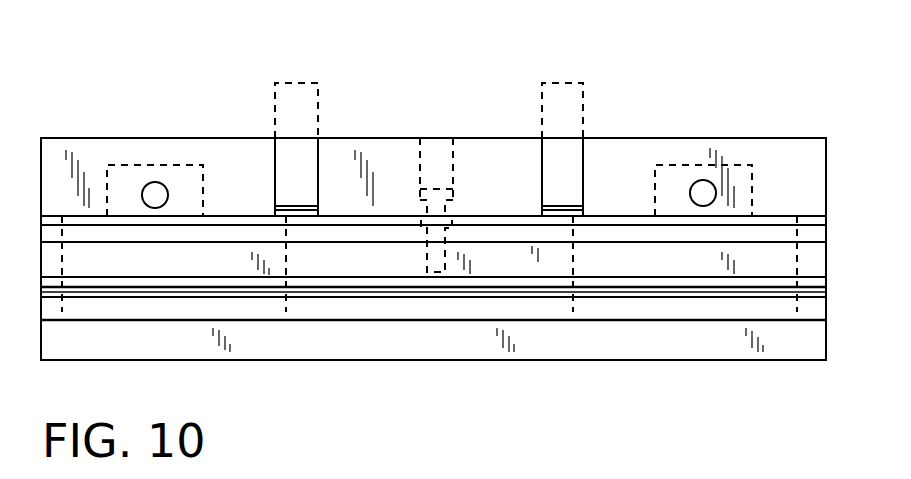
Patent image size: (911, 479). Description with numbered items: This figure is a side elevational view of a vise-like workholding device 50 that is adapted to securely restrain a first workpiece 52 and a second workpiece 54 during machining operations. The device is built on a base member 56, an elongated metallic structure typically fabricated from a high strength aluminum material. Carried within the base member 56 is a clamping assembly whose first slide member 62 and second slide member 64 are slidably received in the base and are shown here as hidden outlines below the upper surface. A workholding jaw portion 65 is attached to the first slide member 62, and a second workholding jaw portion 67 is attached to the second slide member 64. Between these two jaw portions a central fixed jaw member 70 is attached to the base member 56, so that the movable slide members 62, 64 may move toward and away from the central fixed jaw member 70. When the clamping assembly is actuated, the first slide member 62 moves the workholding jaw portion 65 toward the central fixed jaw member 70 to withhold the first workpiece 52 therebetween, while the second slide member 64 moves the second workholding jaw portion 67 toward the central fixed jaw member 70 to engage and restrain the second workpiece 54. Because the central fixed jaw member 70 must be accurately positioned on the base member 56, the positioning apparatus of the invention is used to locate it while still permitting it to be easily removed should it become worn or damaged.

The vise-like workholding device 50 is at (118, 376).
The first workpiece 52 is at (297, 86).
The second workpiece 54 is at (562, 83).
The base member 56 is at (810, 340).
The first slide member 62 is at (185, 310).
The second slide member 64 is at (723, 310).
The workholding jaw portion 65 is at (74, 150).
The second workholding jaw portion 67 is at (775, 150).
The central fixed jaw member 70 is at (482, 155).